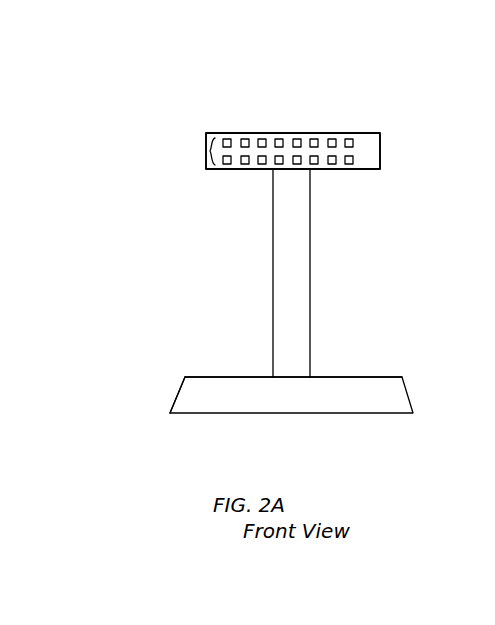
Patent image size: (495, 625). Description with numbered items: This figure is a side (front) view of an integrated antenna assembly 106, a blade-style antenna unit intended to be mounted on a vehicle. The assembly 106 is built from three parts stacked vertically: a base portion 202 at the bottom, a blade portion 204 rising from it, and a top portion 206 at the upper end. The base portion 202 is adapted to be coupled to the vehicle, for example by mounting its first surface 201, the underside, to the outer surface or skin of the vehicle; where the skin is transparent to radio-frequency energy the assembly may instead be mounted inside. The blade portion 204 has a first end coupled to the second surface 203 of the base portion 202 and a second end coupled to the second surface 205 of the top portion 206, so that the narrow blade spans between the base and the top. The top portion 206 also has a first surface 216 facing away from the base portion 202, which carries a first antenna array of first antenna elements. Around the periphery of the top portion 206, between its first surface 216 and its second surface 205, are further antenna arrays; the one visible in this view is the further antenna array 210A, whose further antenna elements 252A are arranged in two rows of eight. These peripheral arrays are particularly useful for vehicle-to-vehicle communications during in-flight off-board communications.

The integrated antenna assembly 106 is at (318, 100).
The first surface of the base portion 201 is at (358, 413).
The base portion 202 is at (177, 392).
The second surface of the base portion 203 is at (357, 377).
The blade portion 204 is at (273, 270).
The second surface of the top portion 205 is at (340, 169).
The top portion 206 is at (380, 148).
The first surface of the top portion 216 is at (308, 133).
The further antenna array 210A is at (197, 153).
The further antenna elements 252A is at (262, 133).